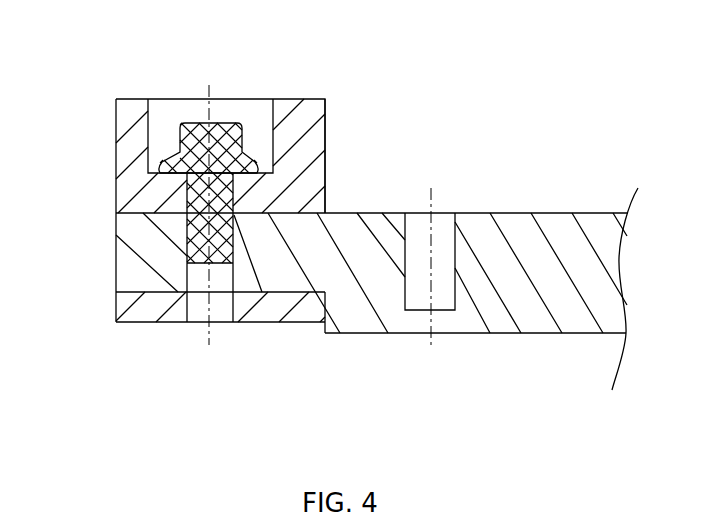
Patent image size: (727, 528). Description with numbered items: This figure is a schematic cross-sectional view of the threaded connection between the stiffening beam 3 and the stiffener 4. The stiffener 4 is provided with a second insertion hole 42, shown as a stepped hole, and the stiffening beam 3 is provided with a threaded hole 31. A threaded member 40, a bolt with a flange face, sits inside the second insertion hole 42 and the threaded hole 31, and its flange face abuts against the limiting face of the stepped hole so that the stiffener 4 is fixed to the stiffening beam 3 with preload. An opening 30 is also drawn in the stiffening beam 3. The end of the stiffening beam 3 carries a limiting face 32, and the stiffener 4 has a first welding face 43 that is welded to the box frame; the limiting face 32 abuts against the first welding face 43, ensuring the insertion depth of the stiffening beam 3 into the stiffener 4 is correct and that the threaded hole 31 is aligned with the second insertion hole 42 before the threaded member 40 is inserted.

The stiffening beam 3 is at (538, 237).
The stiffener 4 is at (305, 113).
The hole 30 is at (442, 302).
The threaded hole 31 is at (197, 277).
The limiting face 32 is at (324, 331).
The threaded member 40 is at (219, 122).
The second insertion hole 42 is at (174, 112).
The first welding face 43 is at (327, 180).